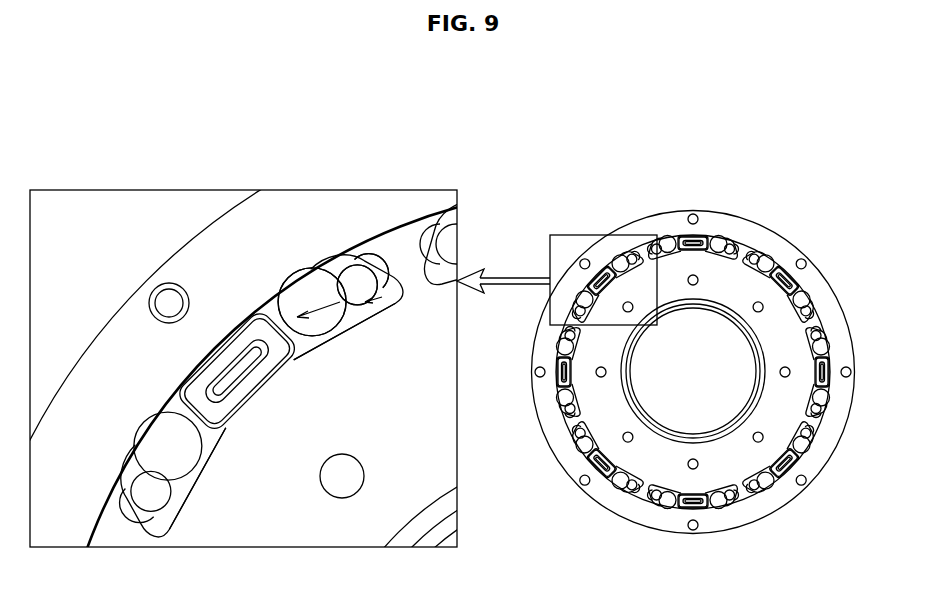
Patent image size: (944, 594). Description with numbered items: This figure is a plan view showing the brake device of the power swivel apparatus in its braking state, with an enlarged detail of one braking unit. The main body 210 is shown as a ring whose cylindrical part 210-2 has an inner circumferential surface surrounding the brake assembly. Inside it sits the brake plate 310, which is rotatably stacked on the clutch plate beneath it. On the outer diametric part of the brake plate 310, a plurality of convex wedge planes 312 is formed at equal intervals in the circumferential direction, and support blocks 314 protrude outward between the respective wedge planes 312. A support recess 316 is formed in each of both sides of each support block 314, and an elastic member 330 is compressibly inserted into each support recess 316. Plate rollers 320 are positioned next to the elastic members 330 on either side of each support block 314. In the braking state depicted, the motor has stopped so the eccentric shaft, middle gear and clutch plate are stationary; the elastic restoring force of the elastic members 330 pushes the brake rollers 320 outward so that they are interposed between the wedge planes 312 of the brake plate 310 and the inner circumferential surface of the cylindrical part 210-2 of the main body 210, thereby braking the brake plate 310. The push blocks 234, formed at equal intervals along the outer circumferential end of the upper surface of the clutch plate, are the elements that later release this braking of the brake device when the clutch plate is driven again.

The main body 210 is at (764, 236).
The cylindrical part 210-2 is at (801, 238).
The push block 234 is at (255, 327).
The brake plate 310 is at (744, 262).
The wedge plane 312 is at (318, 348).
The support block 314 is at (414, 234).
The support recess 316 is at (392, 302).
The plate roller 320 is at (307, 282).
The elastic member 330 is at (366, 280).